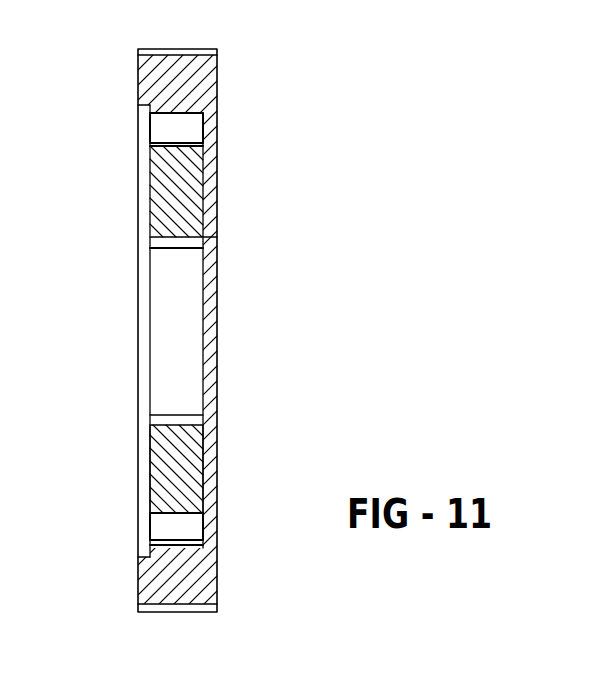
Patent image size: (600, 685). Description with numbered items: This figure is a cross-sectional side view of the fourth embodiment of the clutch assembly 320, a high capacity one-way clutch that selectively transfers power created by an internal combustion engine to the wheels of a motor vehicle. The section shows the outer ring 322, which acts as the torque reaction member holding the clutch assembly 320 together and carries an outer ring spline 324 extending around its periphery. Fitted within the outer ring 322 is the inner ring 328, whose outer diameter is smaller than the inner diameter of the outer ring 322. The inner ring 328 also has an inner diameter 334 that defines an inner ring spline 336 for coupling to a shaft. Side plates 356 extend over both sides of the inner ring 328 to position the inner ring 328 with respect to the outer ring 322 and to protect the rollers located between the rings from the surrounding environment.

The clutch assembly 320 is at (256, 396).
The outer ring 322 is at (137, 88).
The outer ring spline 324 is at (192, 47).
The inner ring 328 is at (217, 215).
The inner diameter 334 is at (170, 415).
The inner ring spline 336 is at (175, 248).
The side plates 356 is at (140, 533).